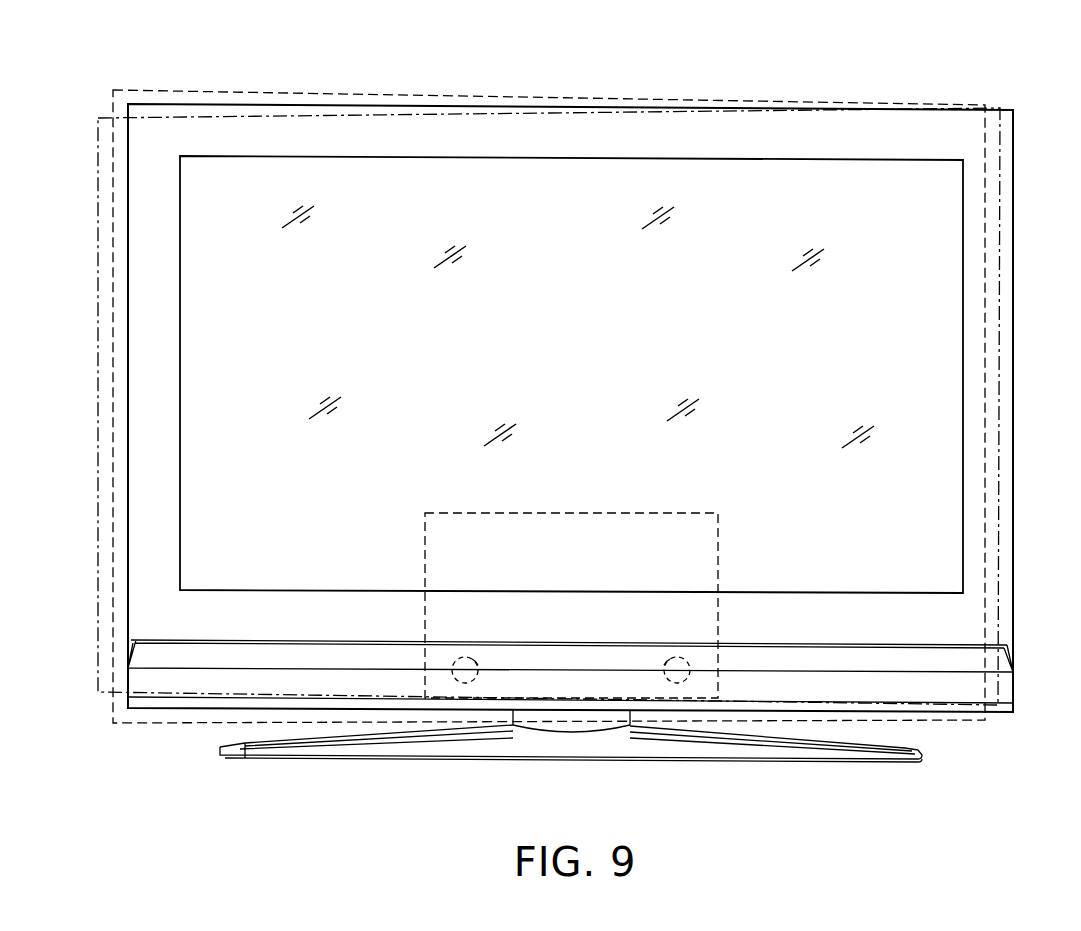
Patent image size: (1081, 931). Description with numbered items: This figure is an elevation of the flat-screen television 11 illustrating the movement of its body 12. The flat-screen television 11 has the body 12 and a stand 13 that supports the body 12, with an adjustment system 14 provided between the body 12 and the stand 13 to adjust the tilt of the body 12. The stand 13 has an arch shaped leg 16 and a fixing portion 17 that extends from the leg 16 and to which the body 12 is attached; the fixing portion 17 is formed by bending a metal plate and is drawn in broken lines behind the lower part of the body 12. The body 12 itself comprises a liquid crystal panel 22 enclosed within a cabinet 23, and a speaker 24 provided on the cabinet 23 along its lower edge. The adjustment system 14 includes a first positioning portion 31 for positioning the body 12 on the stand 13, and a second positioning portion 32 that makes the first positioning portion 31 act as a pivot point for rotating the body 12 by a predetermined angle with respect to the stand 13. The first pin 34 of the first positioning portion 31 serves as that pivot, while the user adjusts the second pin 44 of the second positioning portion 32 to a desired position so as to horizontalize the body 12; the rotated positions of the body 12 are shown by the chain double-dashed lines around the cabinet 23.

The flat-screen television 11 is at (577, 72).
The body 12 is at (160, 120).
The stand 13 is at (969, 752).
The adjustment system 14 is at (700, 610).
The leg 16 is at (840, 750).
The fixing portion 17 is at (638, 513).
The liquid crystal panel 22 is at (875, 175).
The cabinet 23 is at (953, 127).
The speaker 24 is at (223, 657).
The first positioning portion 31 is at (702, 657).
The second positioning portion 32 is at (438, 657).
The first pin 34 is at (658, 653).
The second pin 44 is at (480, 653).